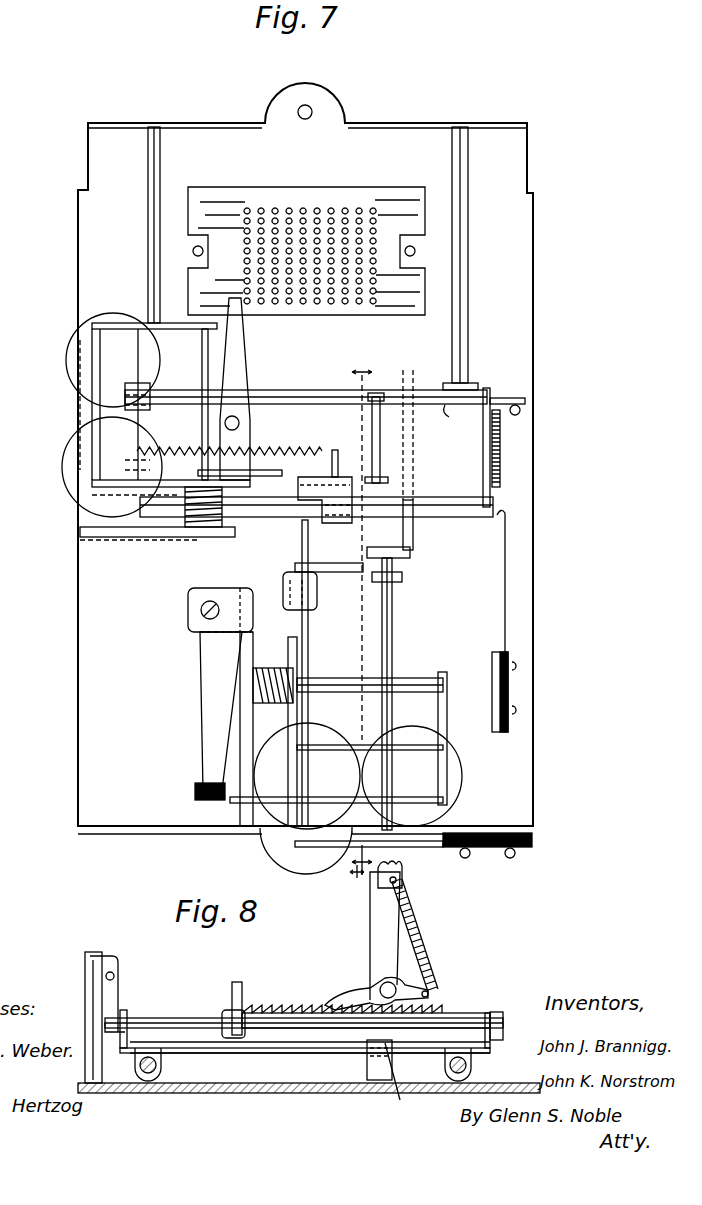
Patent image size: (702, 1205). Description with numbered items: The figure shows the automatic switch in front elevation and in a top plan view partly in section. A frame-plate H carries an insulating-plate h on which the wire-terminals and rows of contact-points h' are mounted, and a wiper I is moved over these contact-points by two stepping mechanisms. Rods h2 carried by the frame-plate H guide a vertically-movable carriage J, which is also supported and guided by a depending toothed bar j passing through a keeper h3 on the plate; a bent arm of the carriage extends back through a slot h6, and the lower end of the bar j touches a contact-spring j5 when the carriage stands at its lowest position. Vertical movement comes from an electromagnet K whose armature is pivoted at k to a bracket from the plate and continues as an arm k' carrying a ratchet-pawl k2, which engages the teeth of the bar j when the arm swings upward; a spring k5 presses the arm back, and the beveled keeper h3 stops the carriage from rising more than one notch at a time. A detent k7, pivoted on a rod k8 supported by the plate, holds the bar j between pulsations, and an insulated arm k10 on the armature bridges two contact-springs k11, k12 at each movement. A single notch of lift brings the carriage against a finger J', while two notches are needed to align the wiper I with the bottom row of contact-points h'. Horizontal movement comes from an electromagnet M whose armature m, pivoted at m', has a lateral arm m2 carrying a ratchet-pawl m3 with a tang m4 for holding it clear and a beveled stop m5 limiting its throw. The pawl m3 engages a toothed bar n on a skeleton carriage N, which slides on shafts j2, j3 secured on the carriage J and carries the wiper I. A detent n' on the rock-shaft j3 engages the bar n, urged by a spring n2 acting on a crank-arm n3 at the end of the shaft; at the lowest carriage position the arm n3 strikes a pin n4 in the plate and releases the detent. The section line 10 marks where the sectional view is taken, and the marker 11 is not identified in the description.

In FIG. 7, the insulating-plate h is at (306, 239).
In FIG. 7, the contact-points h' is at (310, 248).
In FIG. 7, the guide rods h2 is at (165, 168).
In FIG. 8, the guide rods h2 is at (160, 1066).
In FIG. 7, the keeper h3 is at (285, 578).
In FIG. 7, the slot h6 is at (415, 545).
In FIG. 7, the frame-plate H is at (540, 468).
In FIG. 8, the frame-plate H is at (250, 1093).
In FIG. 7, the electromagnet M is at (66, 362).
In FIG. 7, the armature m is at (165, 431).
In FIG. 7, the pivot m' is at (190, 404).
In FIG. 7, the lateral arm m2 is at (165, 482).
In FIG. 8, the lateral arm m2 is at (380, 930).
In FIG. 7, the ratchet-pawl m3 is at (254, 465).
In FIG. 8, the ratchet-pawl m3 is at (362, 985).
In FIG. 8, the tang m4 is at (402, 995).
In FIG. 7, the beveled stop m5 is at (325, 486).
In FIG. 8, the beveled stop m5 is at (303, 1005).
In FIG. 7, the wiper I is at (242, 360).
In FIG. 7, the vertically-movable carriage J is at (307, 430).
In FIG. 8, the vertically-movable carriage J is at (305, 1043).
In FIG. 7, the finger J' is at (496, 621).
In FIG. 7, the toothed bar j is at (310, 628).
In FIG. 7, the shaft j2 is at (440, 503).
In FIG. 7, the rock-shaft j3 is at (453, 417).
In FIG. 8, the rock-shaft j3 is at (172, 1022).
In FIG. 7, the contact-spring j5 is at (436, 852).
In FIG. 7, the skeleton carriage N is at (252, 430).
In FIG. 8, the skeleton carriage N is at (312, 1045).
In FIG. 7, the toothed bar n is at (357, 451).
In FIG. 7, the detent n' is at (366, 438).
In FIG. 8, the detent n' is at (243, 1006).
In FIG. 7, the spring n2 is at (500, 452).
In FIG. 8, the spring n2 is at (118, 976).
In FIG. 7, the crank-arm n3 is at (506, 396).
In FIG. 8, the crank-arm n3 is at (118, 958).
In FIG. 7, the pin n4 is at (530, 411).
In FIG. 7, the electromagnet K is at (462, 778).
In FIG. 7, the pivot k is at (336, 729).
In FIG. 7, the arm k' is at (312, 731).
In FIG. 7, the ratchet-pawl k2 is at (322, 697).
In FIG. 7, the spring k5 is at (317, 605).
In FIG. 7, the detent k7 is at (343, 560).
In FIG. 7, the rod k8 is at (395, 632).
In FIG. 7, the insulated arm k10 is at (195, 792).
In FIG. 7, the contact-spring k11 is at (205, 698).
In FIG. 7, the contact-spring k12 is at (200, 655).
In FIG. 7, the section line 10 is at (361, 617).
In FIG. 8, the section line 10 is at (358, 878).
In FIG. 8, the rack teeth 11 is at (440, 1011).